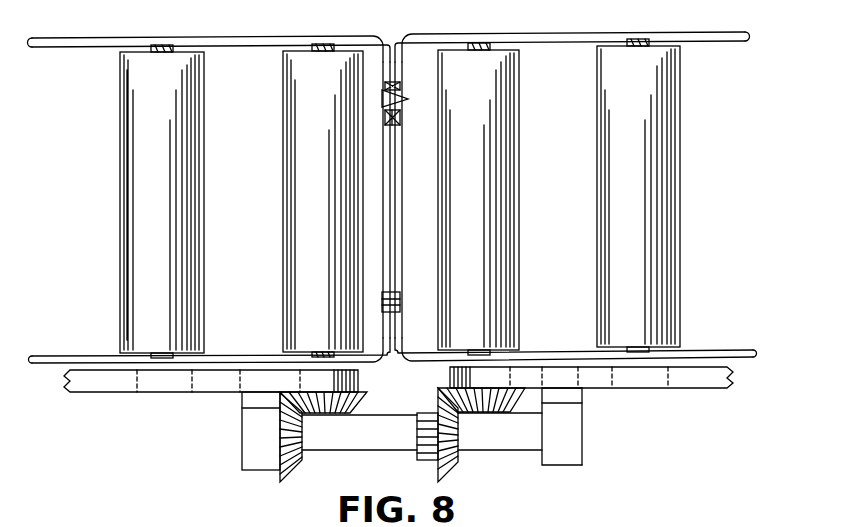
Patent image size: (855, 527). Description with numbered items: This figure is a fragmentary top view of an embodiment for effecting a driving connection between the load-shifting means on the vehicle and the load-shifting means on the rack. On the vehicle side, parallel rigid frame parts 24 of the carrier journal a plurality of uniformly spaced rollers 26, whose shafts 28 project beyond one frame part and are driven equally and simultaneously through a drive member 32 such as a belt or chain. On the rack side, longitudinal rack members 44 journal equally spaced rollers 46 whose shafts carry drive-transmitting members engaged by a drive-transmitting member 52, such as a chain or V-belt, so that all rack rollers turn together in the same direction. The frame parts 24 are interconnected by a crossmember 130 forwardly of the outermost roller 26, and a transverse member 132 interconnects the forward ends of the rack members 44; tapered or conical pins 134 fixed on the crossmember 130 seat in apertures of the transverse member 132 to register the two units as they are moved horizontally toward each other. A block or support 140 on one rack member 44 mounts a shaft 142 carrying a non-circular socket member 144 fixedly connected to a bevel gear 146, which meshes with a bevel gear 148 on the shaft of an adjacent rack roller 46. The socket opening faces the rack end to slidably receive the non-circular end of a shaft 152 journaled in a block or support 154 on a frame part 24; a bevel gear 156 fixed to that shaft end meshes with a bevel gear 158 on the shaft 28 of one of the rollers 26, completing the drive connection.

The frame parts 24 is at (57, 48).
The longitudinal rack members 44 is at (556, 43).
The rollers 26 is at (283, 242).
The rollers 46 is at (500, 252).
The shafts 28 is at (318, 350).
The drive member 32 is at (93, 392).
The drive-transmitting member 52 is at (701, 388).
The crossmember 130 is at (385, 62).
The transverse member 132 is at (396, 68).
The pins 134 is at (406, 100).
The block or support 140 is at (572, 457).
The shaft 142 is at (527, 438).
The non-circular socket member 144 is at (438, 405).
The bevel gear 146 is at (437, 460).
The bevel gear 148 is at (495, 413).
The shaft 152 is at (343, 435).
The block or support 154 is at (242, 461).
The bevel gear 156 is at (292, 465).
The bevel gear 158 is at (355, 400).